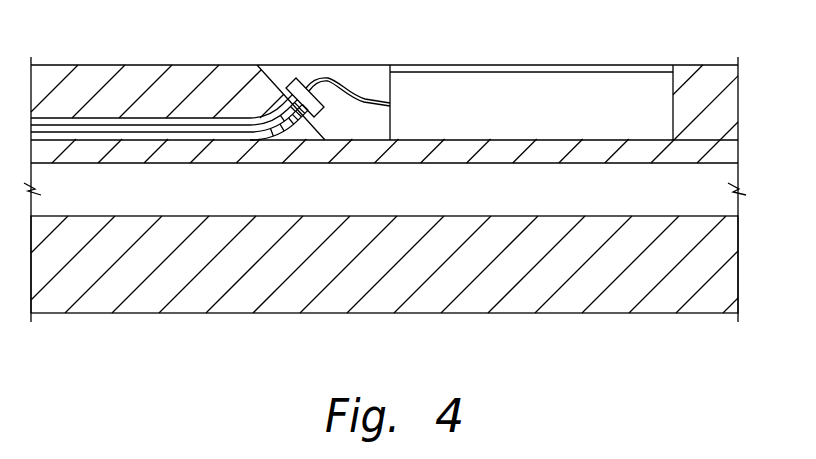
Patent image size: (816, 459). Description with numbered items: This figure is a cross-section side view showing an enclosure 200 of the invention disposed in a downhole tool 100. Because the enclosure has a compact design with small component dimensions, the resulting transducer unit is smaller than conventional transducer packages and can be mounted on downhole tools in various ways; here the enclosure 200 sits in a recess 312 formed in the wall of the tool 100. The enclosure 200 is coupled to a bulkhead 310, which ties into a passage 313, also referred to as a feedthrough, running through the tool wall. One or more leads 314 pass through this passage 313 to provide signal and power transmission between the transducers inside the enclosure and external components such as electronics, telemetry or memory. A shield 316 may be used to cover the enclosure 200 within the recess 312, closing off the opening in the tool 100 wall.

The downhole tool 100 is at (715, 78).
The enclosure 200 is at (622, 95).
The bulkhead 310 is at (299, 80).
The recess 312 is at (363, 77).
The passage 313 is at (105, 119).
The leads 314 is at (174, 131).
The shield 316 is at (496, 64).